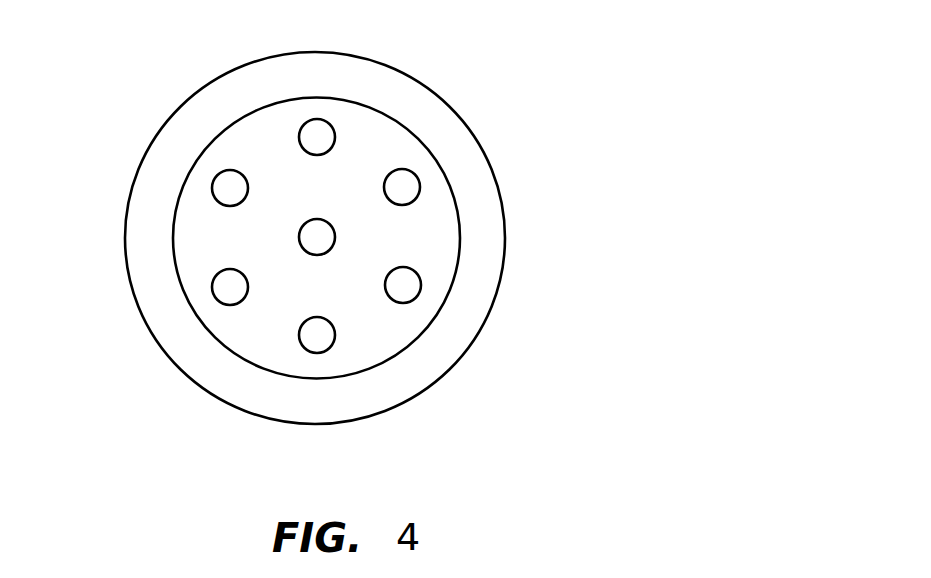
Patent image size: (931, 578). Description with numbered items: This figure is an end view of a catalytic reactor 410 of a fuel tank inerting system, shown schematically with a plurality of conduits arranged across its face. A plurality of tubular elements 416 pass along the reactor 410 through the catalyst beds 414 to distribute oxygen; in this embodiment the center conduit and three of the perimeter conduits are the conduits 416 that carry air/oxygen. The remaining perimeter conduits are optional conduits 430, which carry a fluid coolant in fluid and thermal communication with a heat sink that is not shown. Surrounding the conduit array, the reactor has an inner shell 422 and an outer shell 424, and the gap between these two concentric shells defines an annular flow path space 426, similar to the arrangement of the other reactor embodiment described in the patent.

The reactor 410 is at (548, 110).
The catalyst beds 414 is at (387, 150).
The tubular elements 416 is at (318, 128).
The inner shell 422 is at (457, 200).
The outer shell 424 is at (507, 265).
The annular flow path space 426 is at (463, 323).
The conduits 430 is at (220, 190).